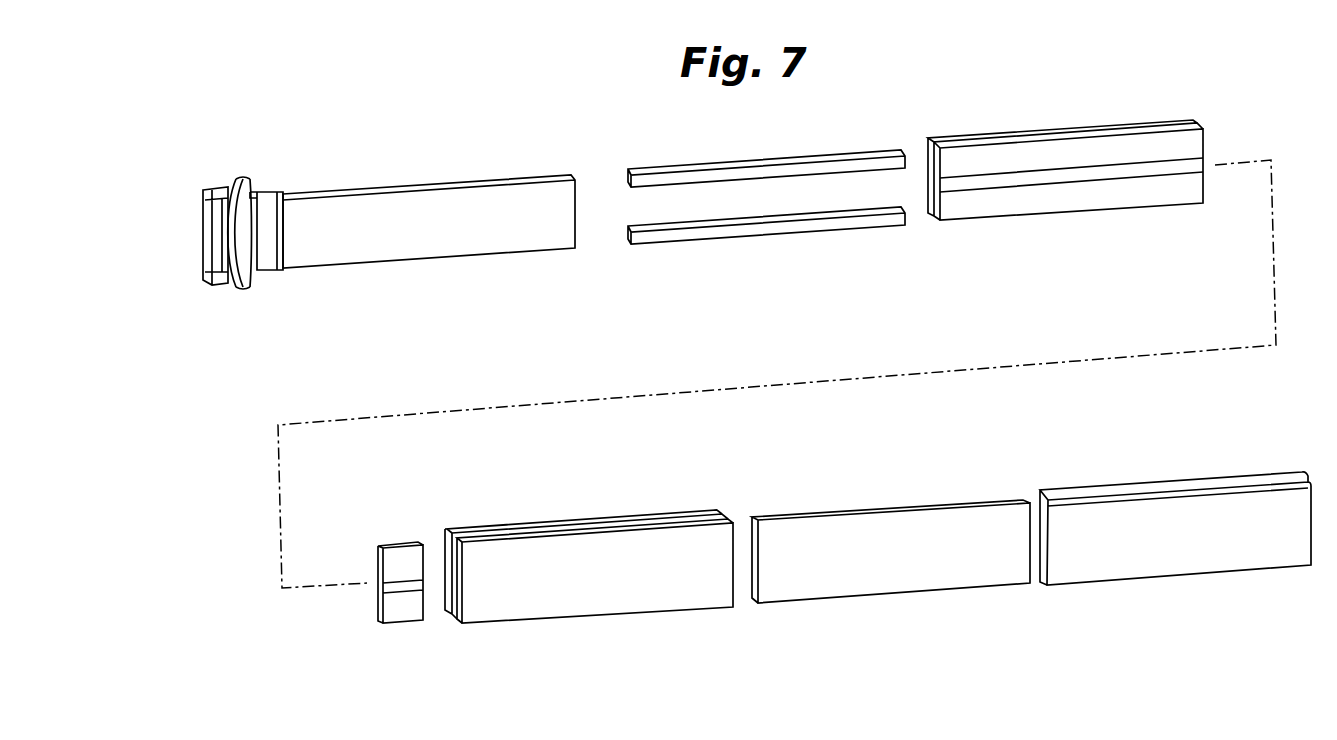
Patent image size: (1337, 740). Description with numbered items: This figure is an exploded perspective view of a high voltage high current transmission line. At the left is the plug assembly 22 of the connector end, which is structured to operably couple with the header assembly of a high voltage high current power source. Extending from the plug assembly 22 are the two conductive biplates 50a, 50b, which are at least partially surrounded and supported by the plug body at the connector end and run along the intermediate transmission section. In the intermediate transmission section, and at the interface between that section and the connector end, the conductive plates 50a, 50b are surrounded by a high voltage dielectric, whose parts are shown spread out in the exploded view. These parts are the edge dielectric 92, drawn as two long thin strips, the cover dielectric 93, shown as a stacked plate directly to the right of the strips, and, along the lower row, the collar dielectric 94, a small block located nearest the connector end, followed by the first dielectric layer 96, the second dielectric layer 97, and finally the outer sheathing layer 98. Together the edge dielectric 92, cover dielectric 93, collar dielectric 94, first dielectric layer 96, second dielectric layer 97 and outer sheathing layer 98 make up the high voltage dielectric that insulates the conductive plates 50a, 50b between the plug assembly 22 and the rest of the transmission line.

The plug assembly 22 is at (190, 163).
The conductive plate 50a is at (417, 200).
The conductive plate 50b is at (387, 186).
The edge dielectric 92 is at (743, 220).
The cover dielectric 93 is at (1045, 143).
The collar dielectric 94 is at (402, 623).
The first dielectric layer 96 is at (671, 512).
The second dielectric layer 97 is at (882, 583).
The outer sheathing layer 98 is at (1123, 568).